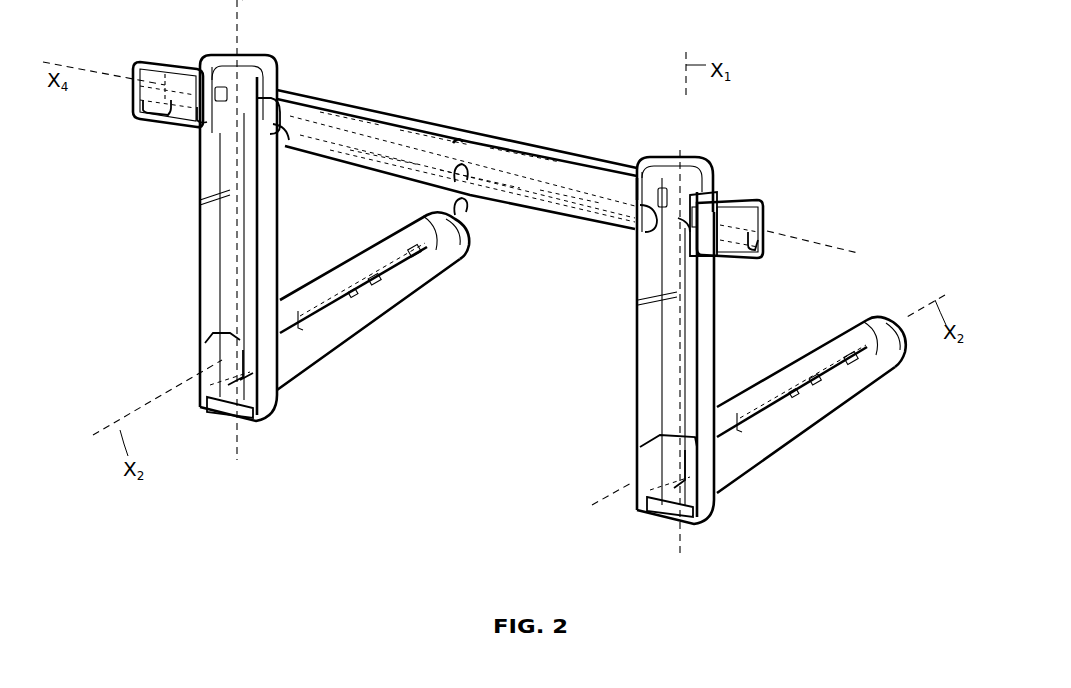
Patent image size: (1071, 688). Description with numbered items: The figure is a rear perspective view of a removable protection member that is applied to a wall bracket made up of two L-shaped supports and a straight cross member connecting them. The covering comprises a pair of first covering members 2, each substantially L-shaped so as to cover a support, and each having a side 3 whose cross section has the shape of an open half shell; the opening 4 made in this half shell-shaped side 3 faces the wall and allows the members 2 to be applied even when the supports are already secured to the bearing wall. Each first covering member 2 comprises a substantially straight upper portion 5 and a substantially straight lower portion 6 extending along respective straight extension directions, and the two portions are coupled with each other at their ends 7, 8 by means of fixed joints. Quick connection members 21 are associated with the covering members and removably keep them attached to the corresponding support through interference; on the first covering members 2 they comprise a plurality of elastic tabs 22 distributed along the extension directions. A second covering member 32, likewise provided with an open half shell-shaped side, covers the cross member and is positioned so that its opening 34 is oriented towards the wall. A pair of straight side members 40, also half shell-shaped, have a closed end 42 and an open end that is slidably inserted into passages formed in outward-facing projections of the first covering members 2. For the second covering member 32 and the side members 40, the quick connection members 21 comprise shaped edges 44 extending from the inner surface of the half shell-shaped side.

The first covering member 2 is at (287, 250).
The side 3 is at (268, 181).
The opening 4 is at (222, 222).
The upper portion 5 is at (727, 147).
The lower portion 6 is at (403, 283).
The end 7 is at (192, 375).
The end 8 is at (277, 360).
The quick connection member 21 is at (200, 67).
The elastic tab 22 is at (672, 172).
The second covering member 32 is at (473, 137).
The opening 34 is at (577, 190).
The side member 40 is at (150, 58).
The closed end 42 is at (132, 110).
The shaped edge 44 is at (467, 182).